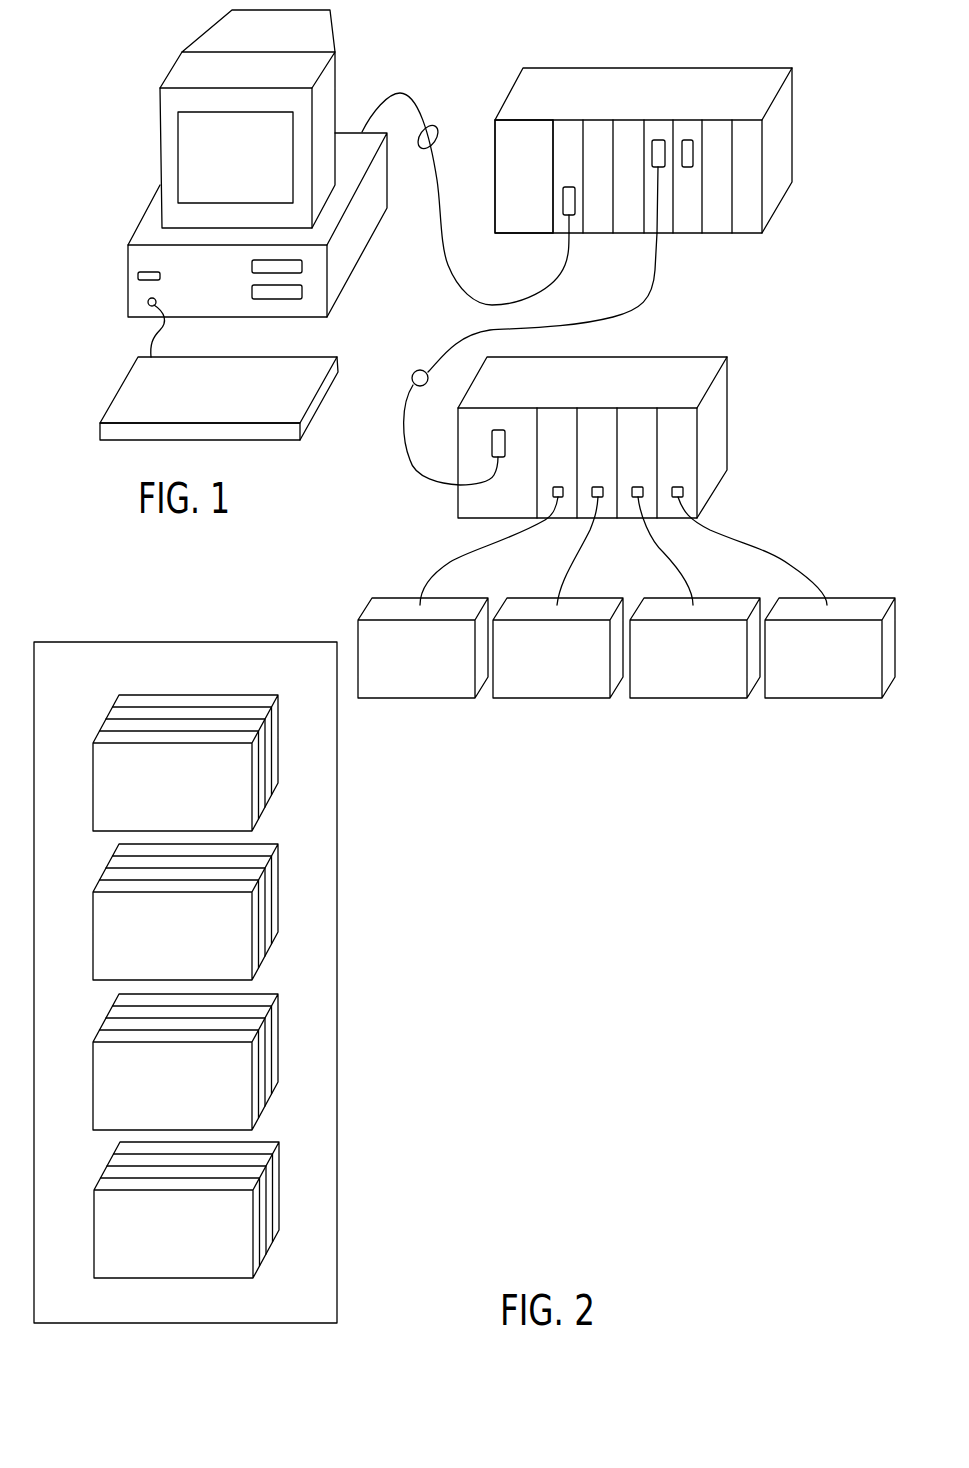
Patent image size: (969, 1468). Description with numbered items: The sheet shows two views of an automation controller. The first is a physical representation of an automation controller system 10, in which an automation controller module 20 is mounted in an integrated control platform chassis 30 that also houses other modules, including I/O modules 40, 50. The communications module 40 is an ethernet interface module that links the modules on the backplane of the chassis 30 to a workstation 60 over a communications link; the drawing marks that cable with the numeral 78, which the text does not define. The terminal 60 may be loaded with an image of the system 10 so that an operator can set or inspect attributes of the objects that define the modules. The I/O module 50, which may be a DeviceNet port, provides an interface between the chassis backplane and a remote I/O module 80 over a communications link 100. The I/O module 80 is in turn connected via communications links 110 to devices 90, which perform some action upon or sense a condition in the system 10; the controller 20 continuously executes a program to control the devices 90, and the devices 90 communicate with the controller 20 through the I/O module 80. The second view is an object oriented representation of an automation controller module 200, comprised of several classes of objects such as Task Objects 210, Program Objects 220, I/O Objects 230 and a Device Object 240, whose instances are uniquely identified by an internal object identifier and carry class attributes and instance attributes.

In FIG. 1, the automation controller system 10 is at (672, 57).
In FIG. 1, the automation controller module 20 is at (495, 158).
In FIG. 1, the integrated control platform (ICP) chassis 30 is at (792, 68).
In FIG. 1, the communications module 40 is at (586, 242).
In FIG. 1, the I/O module 50 is at (665, 235).
In FIG. 1, the workstation 60 is at (343, 128).
In FIG. 1, the communication link cable 78 is at (436, 128).
In FIG. 1, the I/O module 80 is at (667, 355).
In FIG. 1, the devices 90 is at (398, 698).
In FIG. 1, the communications link 100 is at (417, 373).
In FIG. 1, the communications links 110 is at (450, 562).
In FIG. 2, the automation controller module 200 is at (344, 1327).
In FIG. 2, the Task Objects 210 is at (280, 753).
In FIG. 2, the Program Objects 220 is at (280, 886).
In FIG. 2, the I/O Objects 230 is at (282, 1035).
In FIG. 2, the Device Object 240 is at (282, 1183).